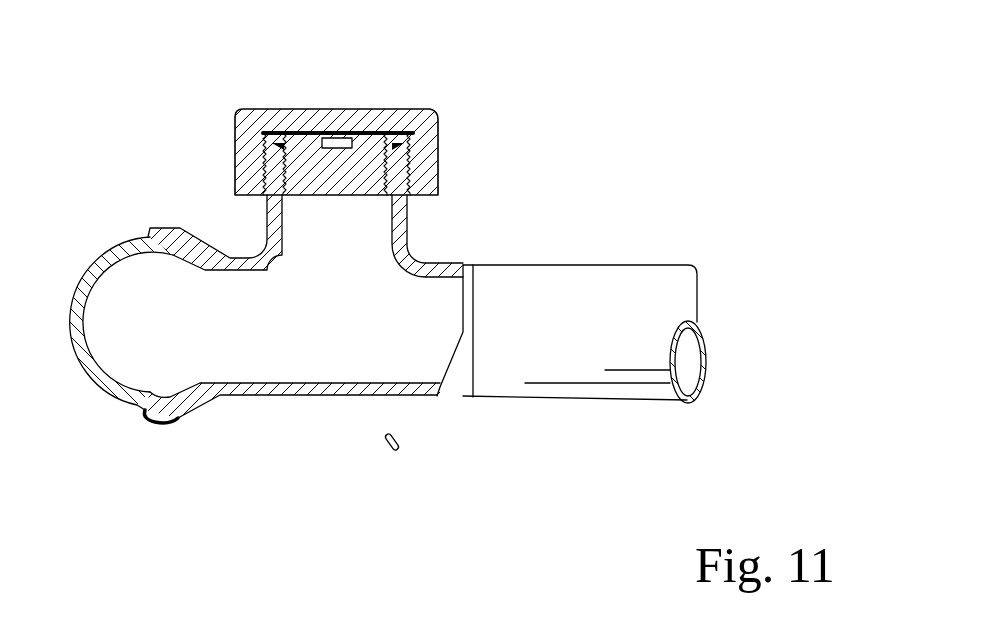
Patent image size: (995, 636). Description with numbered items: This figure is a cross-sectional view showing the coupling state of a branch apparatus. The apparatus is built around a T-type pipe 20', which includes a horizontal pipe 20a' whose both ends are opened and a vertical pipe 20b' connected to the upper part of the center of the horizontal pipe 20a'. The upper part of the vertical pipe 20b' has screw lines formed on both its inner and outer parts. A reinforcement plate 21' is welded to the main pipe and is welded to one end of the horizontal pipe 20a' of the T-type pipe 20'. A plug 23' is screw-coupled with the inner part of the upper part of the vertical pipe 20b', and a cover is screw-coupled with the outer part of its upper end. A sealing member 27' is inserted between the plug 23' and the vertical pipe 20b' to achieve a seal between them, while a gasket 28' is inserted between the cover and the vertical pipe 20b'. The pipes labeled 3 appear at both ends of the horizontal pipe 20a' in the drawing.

The pipe 3 is at (109, 392).
The T-type pipe 20' is at (305, 357).
The horizontal pipe 20a' is at (292, 431).
The vertical pipe 20b' is at (460, 236).
The reinforcement plate 21' is at (180, 447).
The plug 23' is at (335, 118).
The sealing member 27' is at (346, 120).
The gasket 28' is at (338, 116).